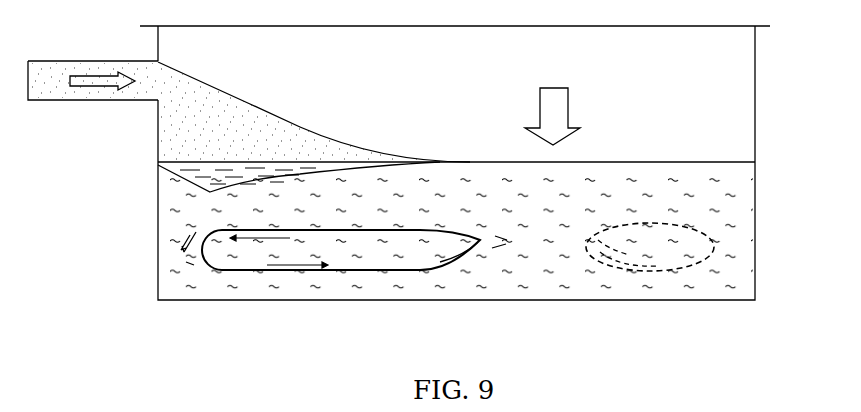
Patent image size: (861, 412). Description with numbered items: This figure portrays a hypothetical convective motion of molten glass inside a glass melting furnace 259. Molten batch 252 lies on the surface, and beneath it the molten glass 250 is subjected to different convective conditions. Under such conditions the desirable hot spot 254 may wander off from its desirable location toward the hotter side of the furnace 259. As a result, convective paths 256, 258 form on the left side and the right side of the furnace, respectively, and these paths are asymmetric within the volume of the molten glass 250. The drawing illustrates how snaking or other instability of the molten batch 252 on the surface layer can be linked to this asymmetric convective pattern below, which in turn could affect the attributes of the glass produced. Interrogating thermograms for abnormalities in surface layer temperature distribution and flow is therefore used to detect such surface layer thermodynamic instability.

The molten glass 250 is at (618, 292).
The molten batch 252 is at (279, 170).
The hot spot 254 is at (557, 92).
The convective path 256 is at (208, 272).
The convective path 258 is at (392, 271).
The furnace 259 is at (755, 198).